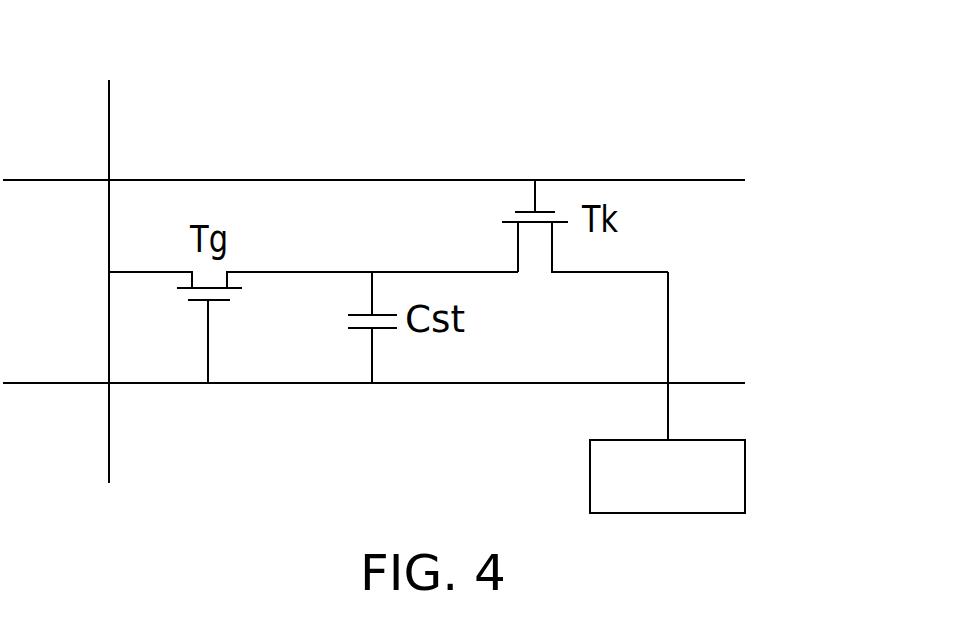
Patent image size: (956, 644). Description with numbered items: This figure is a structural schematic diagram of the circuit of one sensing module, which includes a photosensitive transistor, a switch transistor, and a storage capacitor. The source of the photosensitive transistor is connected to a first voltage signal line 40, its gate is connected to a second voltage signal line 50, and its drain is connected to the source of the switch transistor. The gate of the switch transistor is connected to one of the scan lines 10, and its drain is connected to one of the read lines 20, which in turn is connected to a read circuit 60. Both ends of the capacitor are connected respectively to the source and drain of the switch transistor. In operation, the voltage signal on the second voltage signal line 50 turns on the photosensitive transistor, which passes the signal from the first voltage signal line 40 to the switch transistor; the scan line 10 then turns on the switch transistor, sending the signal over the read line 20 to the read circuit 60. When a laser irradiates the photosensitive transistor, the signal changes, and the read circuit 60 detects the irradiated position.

The scan line 10 is at (262, 180).
The first voltage signal line 40 is at (109, 108).
The second voltage signal line 50 is at (142, 384).
The read line 20 is at (668, 417).
The read circuit 60 is at (745, 497).